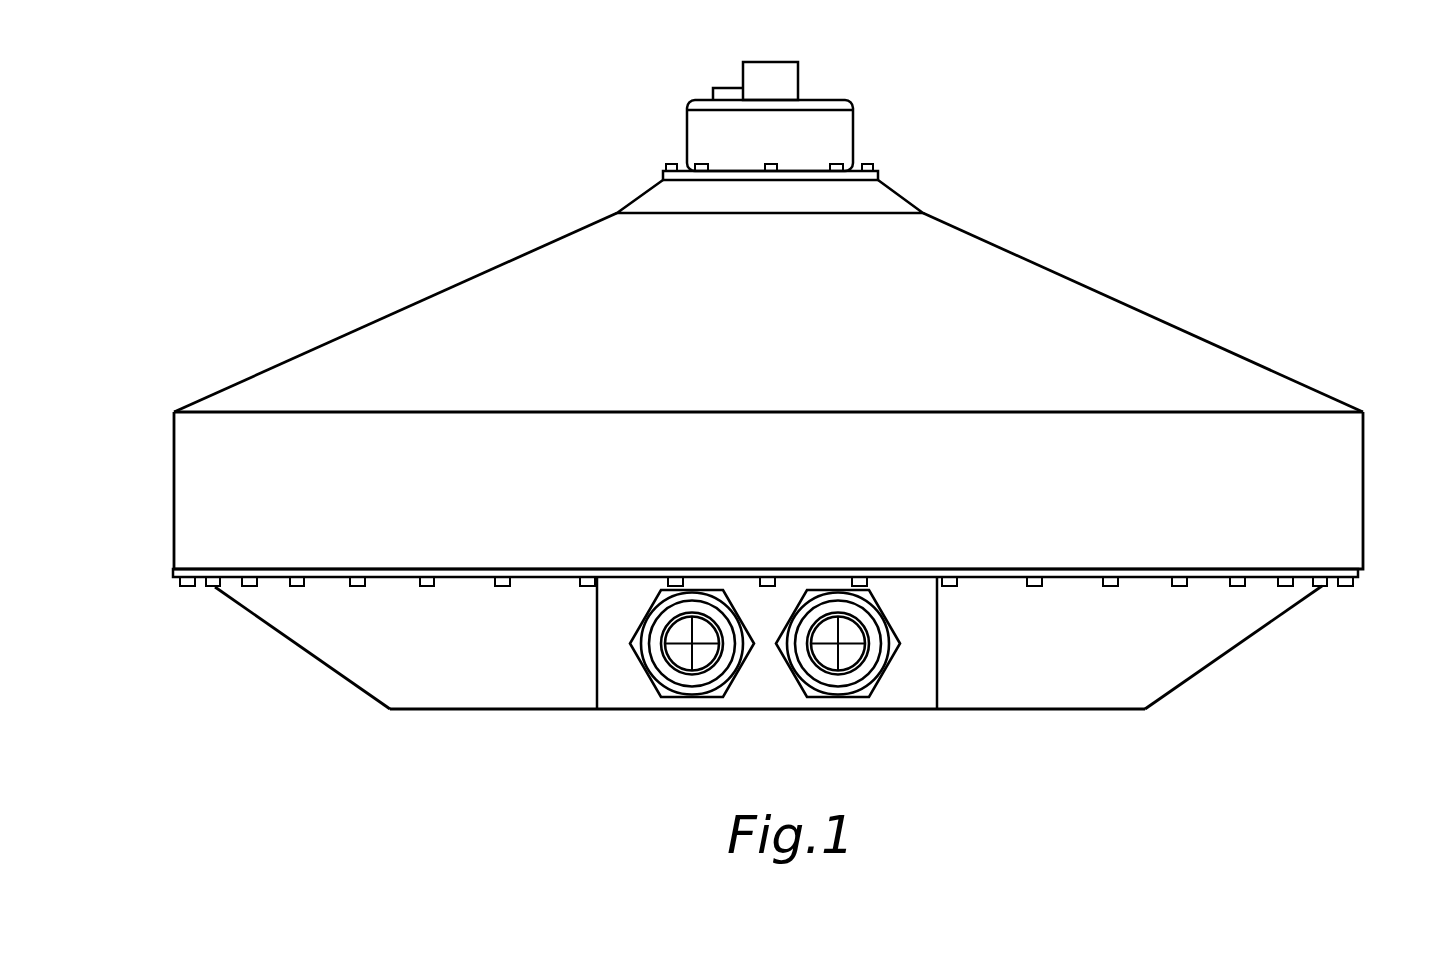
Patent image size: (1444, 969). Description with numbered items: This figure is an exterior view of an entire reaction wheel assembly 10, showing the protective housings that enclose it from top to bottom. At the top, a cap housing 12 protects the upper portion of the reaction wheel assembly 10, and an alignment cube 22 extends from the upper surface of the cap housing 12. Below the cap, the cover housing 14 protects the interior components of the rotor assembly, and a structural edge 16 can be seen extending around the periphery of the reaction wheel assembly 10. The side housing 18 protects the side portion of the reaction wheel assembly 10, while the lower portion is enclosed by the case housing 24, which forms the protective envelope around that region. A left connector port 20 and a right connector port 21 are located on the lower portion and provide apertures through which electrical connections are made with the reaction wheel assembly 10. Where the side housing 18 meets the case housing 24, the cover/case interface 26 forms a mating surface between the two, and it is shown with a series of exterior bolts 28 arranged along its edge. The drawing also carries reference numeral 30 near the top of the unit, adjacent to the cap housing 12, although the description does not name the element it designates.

The reaction wheel assembly 10 is at (1162, 188).
The cap housing 12 is at (687, 128).
The cover housing 14 is at (437, 295).
The structural edge 16 is at (285, 412).
The side housing 18 is at (173, 497).
The left connector port 20 is at (885, 677).
The right connector port 21 is at (737, 682).
The alignment cube 22 is at (798, 78).
The case housing 24 is at (510, 710).
The cover/case interface 26 is at (323, 578).
The exterior bolts 28 is at (702, 165).
The mounting flange 30 is at (773, 170).